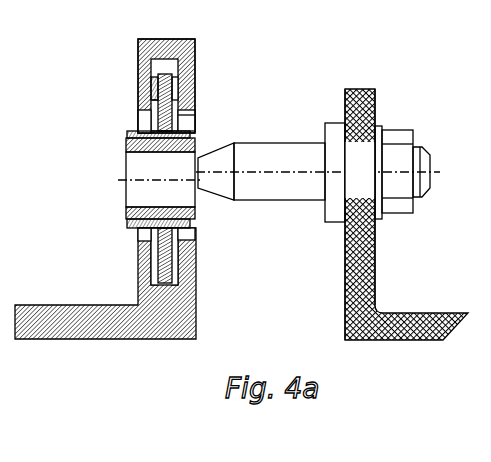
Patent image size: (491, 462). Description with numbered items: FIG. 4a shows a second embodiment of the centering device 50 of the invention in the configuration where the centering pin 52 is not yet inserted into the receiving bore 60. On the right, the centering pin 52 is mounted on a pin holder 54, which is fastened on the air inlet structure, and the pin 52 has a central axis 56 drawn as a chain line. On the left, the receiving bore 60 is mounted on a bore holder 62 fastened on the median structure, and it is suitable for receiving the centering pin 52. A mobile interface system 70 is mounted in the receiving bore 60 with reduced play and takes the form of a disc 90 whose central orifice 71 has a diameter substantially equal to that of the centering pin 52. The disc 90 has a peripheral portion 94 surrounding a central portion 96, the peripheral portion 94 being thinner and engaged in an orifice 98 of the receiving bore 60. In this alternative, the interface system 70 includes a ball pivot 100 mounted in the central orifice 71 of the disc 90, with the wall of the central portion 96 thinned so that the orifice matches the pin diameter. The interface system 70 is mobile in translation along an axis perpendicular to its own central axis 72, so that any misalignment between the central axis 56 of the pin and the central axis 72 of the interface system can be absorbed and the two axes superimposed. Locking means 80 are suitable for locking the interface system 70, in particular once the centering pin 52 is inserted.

The device 50 is at (308, 68).
The centering pin 52 is at (288, 155).
The pin holder 54 is at (375, 97).
The central axis 56 is at (435, 172).
The receiving bore 60 is at (147, 121).
The bore holder 62 is at (138, 46).
The interface system 70 is at (174, 127).
The central orifice 71 is at (142, 165).
The central axis 72 is at (157, 180).
The locking means 80 is at (194, 80).
The disc 90 is at (195, 228).
The peripheral portion 94 is at (150, 70).
The central portion 96 is at (127, 132).
The orifice 98 is at (165, 68).
The ball pivot 100 is at (127, 150).